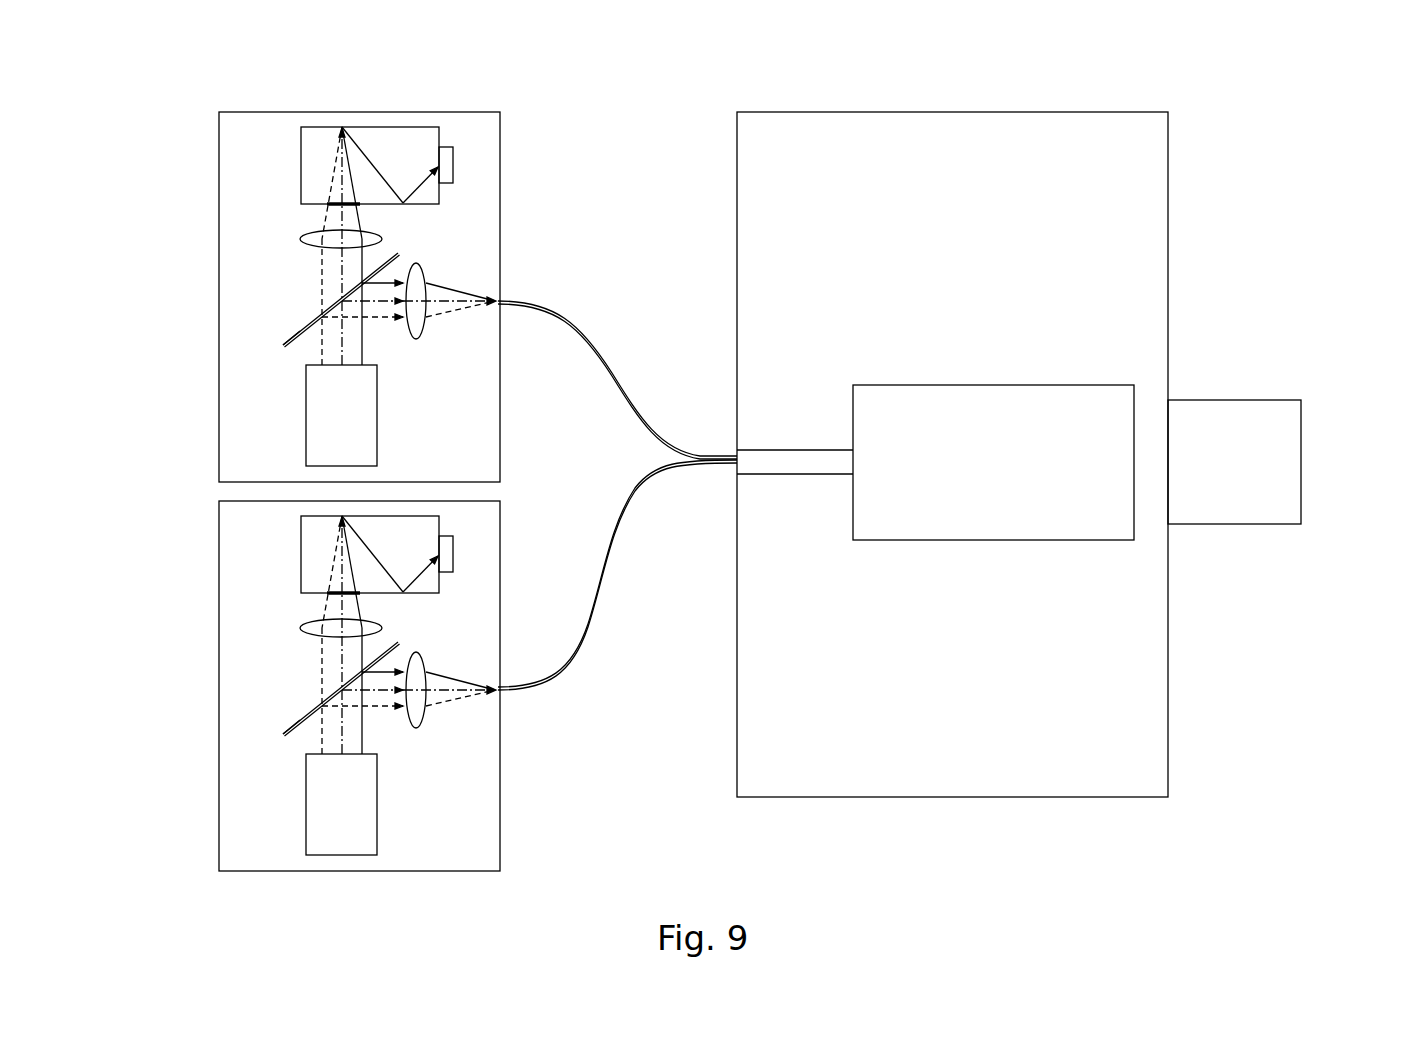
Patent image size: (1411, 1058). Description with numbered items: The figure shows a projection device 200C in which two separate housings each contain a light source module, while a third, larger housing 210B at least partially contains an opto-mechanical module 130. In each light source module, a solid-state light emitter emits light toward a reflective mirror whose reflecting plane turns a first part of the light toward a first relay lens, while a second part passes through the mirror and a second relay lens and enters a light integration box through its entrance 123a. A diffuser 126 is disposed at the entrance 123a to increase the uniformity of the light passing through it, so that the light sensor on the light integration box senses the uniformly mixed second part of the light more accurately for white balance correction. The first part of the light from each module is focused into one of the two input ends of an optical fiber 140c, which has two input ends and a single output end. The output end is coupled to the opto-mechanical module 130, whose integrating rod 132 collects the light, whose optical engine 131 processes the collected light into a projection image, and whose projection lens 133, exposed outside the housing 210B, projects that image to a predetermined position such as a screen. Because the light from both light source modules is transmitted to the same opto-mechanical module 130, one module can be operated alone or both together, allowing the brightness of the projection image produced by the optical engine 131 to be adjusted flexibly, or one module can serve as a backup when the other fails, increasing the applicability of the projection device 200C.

The projection device 200C is at (97, 72).
The entrance 123a is at (323, 207).
The diffuser 126 is at (327, 203).
The housing 210B is at (1168, 143).
The opto-mechanical module 130 is at (1073, 530).
The optical engine 131 is at (995, 520).
The integrating rod 132 is at (788, 463).
The projection lens 133 is at (1209, 510).
The optical fiber 140c is at (635, 481).